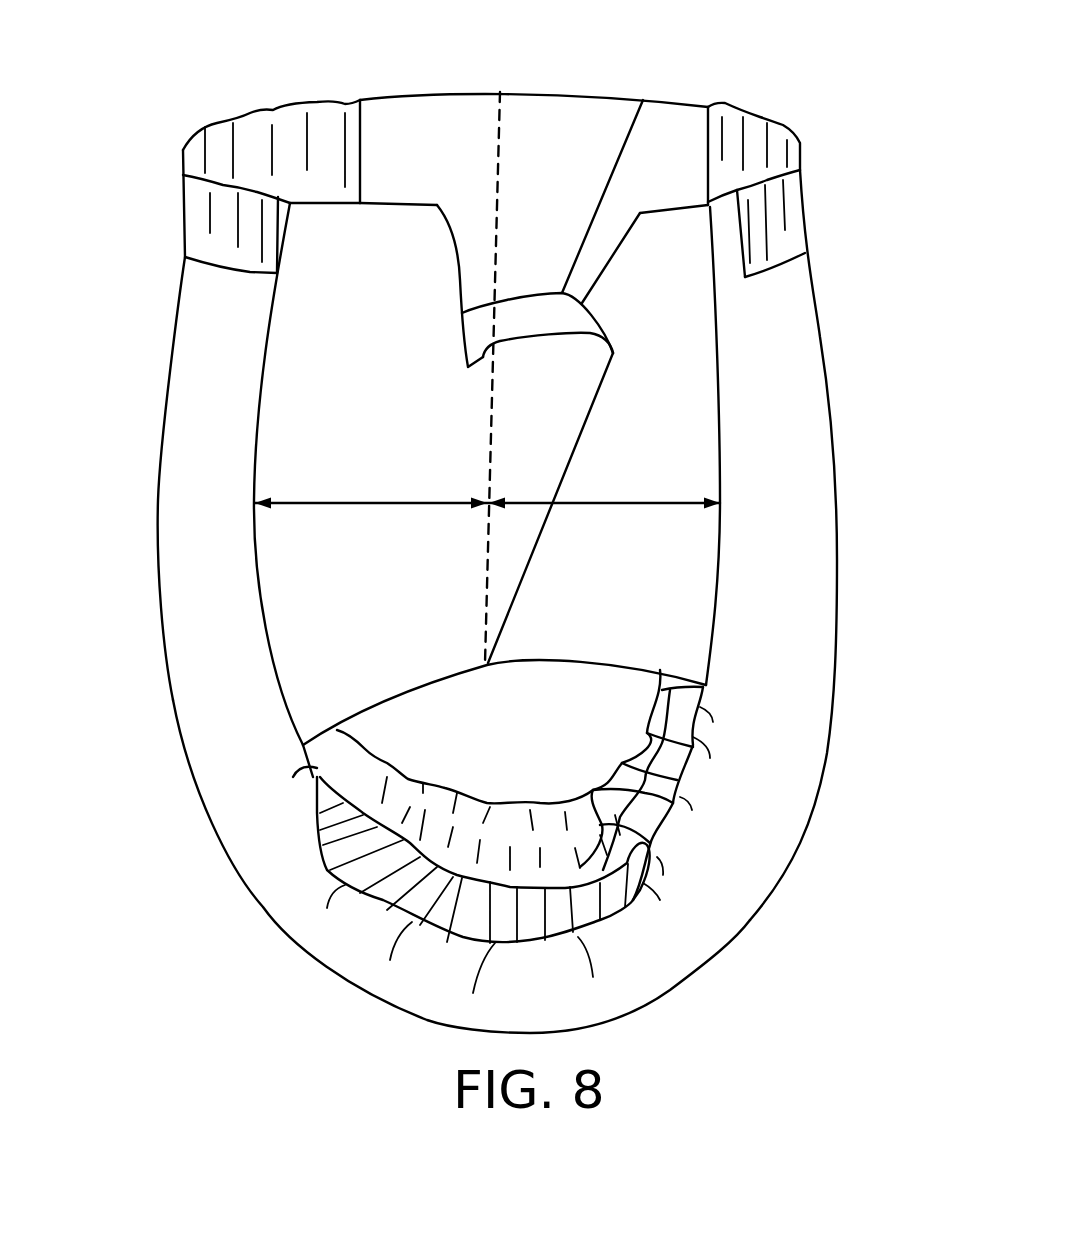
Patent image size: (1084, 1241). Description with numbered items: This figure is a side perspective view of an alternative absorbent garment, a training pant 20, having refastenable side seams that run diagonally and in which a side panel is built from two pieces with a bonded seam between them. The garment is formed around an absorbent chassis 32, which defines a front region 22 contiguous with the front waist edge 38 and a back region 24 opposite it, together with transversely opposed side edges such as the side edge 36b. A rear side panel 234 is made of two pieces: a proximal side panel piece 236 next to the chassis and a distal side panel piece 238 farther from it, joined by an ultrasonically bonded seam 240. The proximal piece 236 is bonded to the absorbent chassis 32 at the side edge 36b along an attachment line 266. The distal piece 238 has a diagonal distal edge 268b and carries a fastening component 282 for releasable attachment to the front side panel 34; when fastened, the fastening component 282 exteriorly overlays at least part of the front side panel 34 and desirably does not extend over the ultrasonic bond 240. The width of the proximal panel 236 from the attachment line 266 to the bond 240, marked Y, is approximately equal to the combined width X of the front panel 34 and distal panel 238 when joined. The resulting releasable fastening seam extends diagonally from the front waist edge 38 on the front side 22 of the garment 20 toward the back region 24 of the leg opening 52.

The training pant 20 is at (862, 170).
The front region 22 is at (820, 317).
The back region 24 is at (158, 530).
The absorbent chassis 32 is at (190, 598).
The front side panel 34 is at (722, 412).
The side edge 36b is at (253, 415).
The front waist edge 38 is at (723, 107).
The leg opening 52 is at (585, 761).
The rear side panel 234 is at (422, 187).
The proximal side panel piece 236 is at (322, 339).
The distal side panel piece 238 is at (573, 415).
The ultrasonically bonded seam 240 is at (487, 613).
The attachment line 266 is at (253, 377).
The diagonal distal edge 268b is at (570, 467).
The fastening component 282 is at (485, 347).